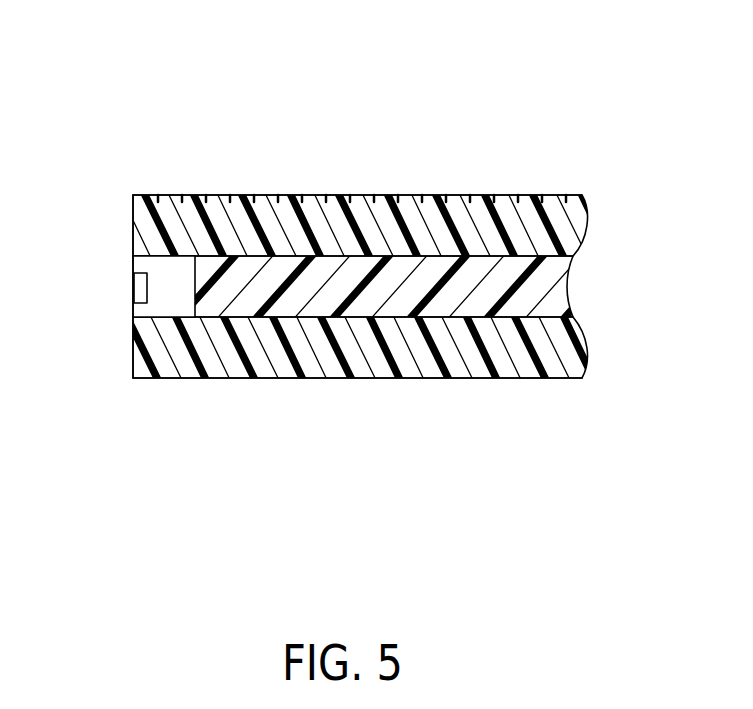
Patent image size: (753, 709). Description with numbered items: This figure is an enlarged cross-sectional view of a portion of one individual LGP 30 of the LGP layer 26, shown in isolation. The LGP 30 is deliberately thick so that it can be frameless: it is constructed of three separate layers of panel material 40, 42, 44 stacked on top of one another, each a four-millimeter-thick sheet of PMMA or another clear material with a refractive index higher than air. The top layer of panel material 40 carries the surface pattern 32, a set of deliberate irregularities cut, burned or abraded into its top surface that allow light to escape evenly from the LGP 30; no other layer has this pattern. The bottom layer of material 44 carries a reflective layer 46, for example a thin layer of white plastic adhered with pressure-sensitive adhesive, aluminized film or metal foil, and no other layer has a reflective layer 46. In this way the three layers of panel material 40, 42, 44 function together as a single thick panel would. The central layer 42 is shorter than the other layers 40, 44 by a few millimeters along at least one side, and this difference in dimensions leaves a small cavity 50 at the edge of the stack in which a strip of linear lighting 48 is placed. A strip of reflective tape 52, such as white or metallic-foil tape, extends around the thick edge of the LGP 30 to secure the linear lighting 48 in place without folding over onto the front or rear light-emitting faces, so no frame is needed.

The LGP layer 26 is at (188, 134).
The LGP 30 is at (405, 195).
The surface pattern 32 is at (305, 195).
The top layer of panel material 40 is at (578, 225).
The middle layer of panel material 42 is at (560, 287).
The bottom layer of panel material 44 is at (563, 343).
The reflective layer 46 is at (380, 380).
The strip of linear lighting 48 is at (136, 312).
The cavity 50 is at (165, 287).
The reflective tape 52 is at (133, 352).